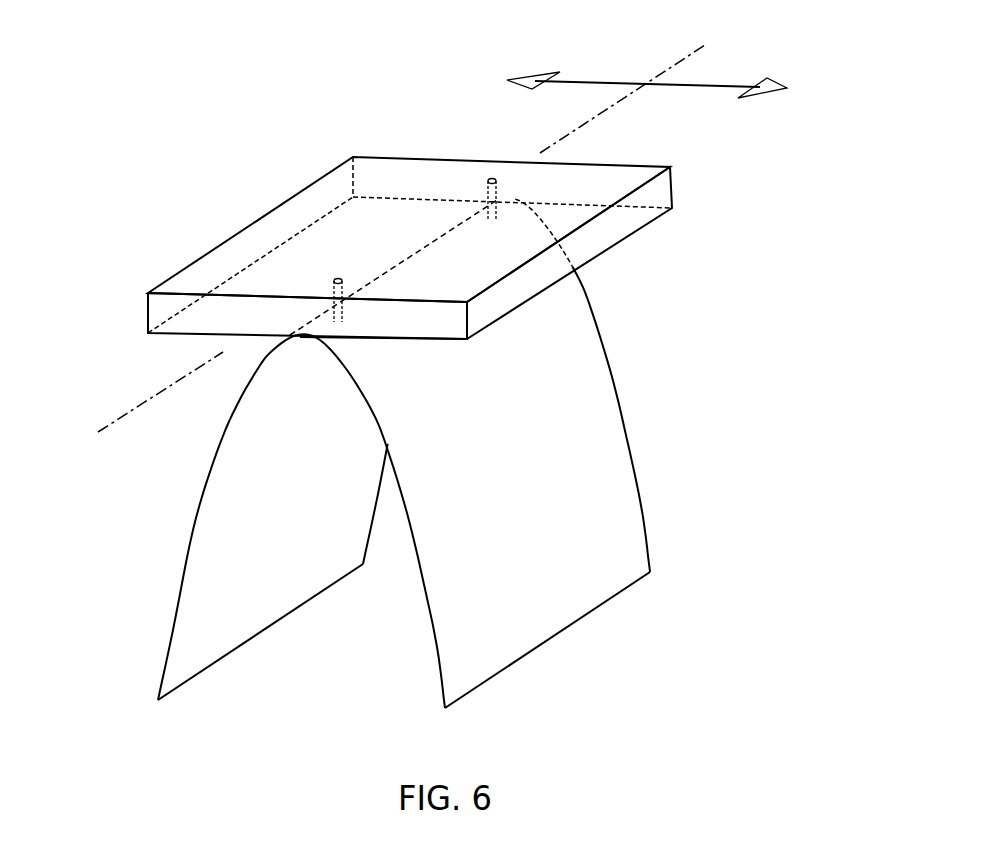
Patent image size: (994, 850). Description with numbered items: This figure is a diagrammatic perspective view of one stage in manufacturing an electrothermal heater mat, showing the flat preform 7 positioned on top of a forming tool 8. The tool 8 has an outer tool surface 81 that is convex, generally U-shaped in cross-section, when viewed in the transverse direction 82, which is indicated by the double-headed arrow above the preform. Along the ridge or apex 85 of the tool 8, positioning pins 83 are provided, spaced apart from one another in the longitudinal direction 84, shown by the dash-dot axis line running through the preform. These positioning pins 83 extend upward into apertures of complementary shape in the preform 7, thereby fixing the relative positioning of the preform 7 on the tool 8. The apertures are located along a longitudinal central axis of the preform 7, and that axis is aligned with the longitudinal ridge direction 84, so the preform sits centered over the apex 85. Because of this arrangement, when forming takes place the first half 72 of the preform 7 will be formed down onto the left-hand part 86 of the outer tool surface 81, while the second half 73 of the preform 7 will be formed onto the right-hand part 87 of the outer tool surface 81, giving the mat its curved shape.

The preform 7 is at (672, 187).
The first half of the preform 72 is at (208, 322).
The second half of the preform 73 is at (432, 323).
The forming tool 8 is at (415, 453).
The outer tool surface 81 is at (607, 435).
The transverse direction 82 is at (722, 83).
The positioning pins 83 is at (337, 303).
The longitudinal direction 84 is at (130, 412).
The ridge or apex of the tool 85 is at (408, 272).
The left-hand part of the outer tool surface 86 is at (193, 530).
The right-hand part of the outer tool surface 87 is at (533, 630).